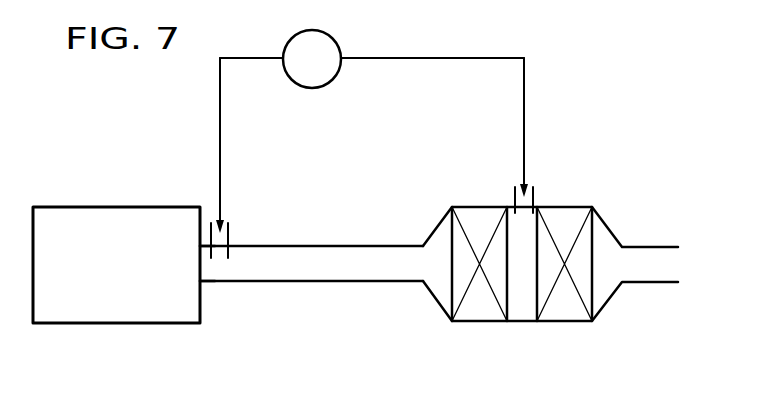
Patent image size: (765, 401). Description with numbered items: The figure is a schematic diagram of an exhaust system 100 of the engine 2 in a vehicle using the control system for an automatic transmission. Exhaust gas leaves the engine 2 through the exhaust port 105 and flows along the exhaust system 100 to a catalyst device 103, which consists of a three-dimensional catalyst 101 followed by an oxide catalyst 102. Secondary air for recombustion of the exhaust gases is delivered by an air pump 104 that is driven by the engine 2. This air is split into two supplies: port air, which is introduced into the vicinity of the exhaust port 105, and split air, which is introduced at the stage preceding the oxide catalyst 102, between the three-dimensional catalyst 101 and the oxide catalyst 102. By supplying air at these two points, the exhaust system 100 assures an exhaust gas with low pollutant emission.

The engine 2 is at (130, 312).
The exhaust system 100 is at (341, 289).
The three-dimensional catalyst 101 is at (478, 310).
The oxide catalyst 102 is at (562, 310).
The catalyst device 103 is at (577, 200).
The air pump 104 is at (330, 50).
The exhaust port 105 is at (202, 277).